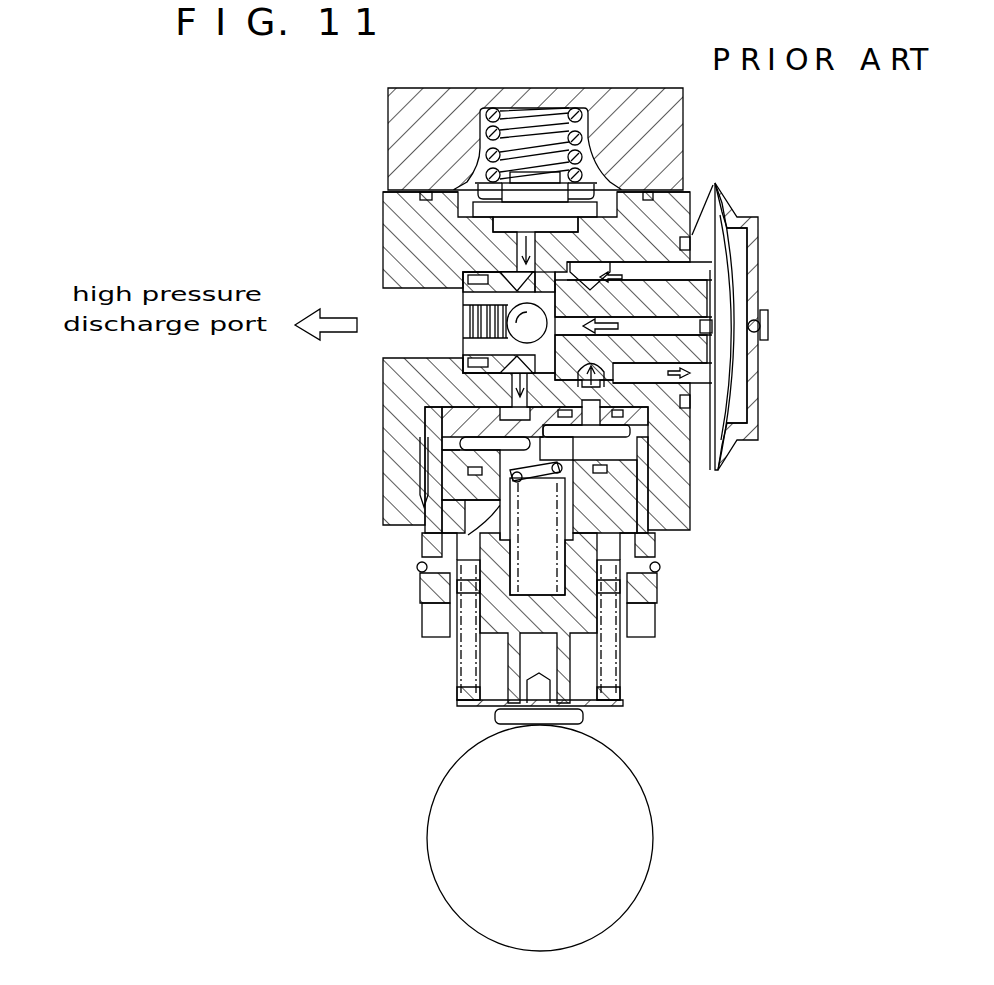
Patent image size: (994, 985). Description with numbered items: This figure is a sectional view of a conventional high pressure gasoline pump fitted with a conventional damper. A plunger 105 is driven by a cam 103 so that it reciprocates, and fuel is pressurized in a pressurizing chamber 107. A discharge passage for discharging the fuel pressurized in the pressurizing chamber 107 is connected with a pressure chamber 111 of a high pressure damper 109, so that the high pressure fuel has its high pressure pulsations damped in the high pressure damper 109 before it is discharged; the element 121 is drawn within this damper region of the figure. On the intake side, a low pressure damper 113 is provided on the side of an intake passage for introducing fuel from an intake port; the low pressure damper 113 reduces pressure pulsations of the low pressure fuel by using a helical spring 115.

The cam 103 is at (654, 843).
The plunger 105 is at (420, 540).
The pressurizing chamber 107 is at (425, 600).
The high pressure damper 109 is at (755, 256).
The pressure chamber 111 is at (747, 376).
The low pressure damper 113 is at (668, 118).
The helical spring 115 is at (400, 132).
The diaphragm 121 is at (767, 303).